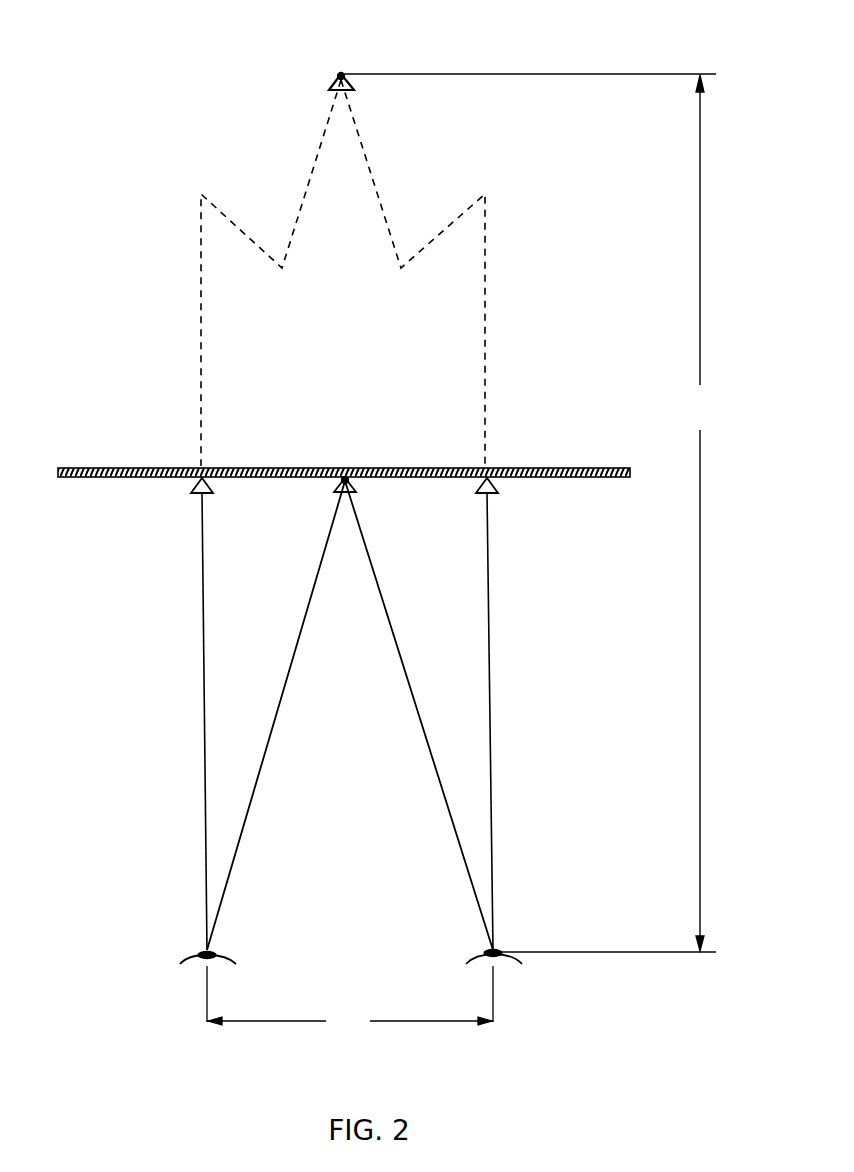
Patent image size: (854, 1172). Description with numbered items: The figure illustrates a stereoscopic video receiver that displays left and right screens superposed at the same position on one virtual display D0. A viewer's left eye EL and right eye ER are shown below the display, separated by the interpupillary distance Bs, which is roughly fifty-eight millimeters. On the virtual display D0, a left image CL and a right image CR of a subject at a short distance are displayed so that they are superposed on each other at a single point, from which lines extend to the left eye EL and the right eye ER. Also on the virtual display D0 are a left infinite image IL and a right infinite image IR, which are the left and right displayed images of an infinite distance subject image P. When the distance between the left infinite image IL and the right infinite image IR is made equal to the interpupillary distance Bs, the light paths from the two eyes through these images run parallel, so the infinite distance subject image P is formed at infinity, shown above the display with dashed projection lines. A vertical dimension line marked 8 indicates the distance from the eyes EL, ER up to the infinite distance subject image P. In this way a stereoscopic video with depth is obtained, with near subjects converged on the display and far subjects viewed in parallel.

The infinite distance subject image P is at (340, 74).
The virtual display D0 is at (113, 478).
The left infinite image IL is at (196, 498).
The right infinite image IR is at (493, 498).
The left image CL is at (334, 492).
The right image CR is at (352, 486).
The left eye EL is at (202, 968).
The right eye ER is at (512, 978).
The interpupillary distance Bs is at (350, 1021).
The distance from eyes to point P 8 is at (528, 513).